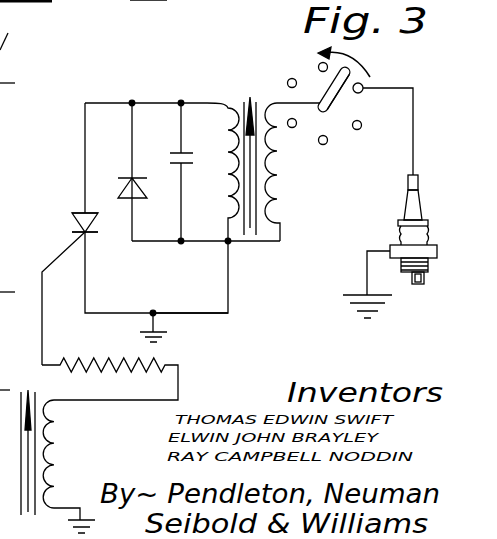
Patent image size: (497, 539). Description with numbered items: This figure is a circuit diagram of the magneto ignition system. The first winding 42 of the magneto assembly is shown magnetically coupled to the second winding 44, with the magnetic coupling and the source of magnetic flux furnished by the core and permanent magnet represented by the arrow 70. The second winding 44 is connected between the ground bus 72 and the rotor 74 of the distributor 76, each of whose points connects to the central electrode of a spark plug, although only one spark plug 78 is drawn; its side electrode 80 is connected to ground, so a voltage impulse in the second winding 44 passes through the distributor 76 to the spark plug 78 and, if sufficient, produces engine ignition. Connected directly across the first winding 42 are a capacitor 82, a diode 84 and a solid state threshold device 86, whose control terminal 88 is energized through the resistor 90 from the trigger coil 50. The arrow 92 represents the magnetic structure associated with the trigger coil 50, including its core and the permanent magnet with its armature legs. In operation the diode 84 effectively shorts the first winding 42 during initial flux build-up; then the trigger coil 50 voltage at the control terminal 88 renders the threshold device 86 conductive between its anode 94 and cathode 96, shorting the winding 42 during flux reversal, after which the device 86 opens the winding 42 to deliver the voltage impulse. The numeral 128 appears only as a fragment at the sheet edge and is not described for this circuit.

The first winding 42 is at (210, 108).
The second winding 44 is at (277, 165).
The trigger coil 50 is at (49, 452).
The arrow representing magnetic coupling 70 is at (250, 95).
The ground bus 72 is at (195, 313).
The rotor of distributor 74 is at (340, 98).
The distributor 76 is at (323, 93).
The spark plug 78 is at (421, 203).
The side electrode 80 is at (420, 284).
The capacitor 82 is at (178, 153).
The diode 84 is at (127, 178).
The solid state threshold device 86 is at (72, 222).
The control terminal 88 is at (74, 242).
The resistor 90 is at (125, 360).
The arrow representing magnetic structure 92 is at (27, 512).
The anode 94 is at (75, 213).
The cathode 96 is at (88, 236).
The lead (adjacent figure) 128 is at (151, 8).